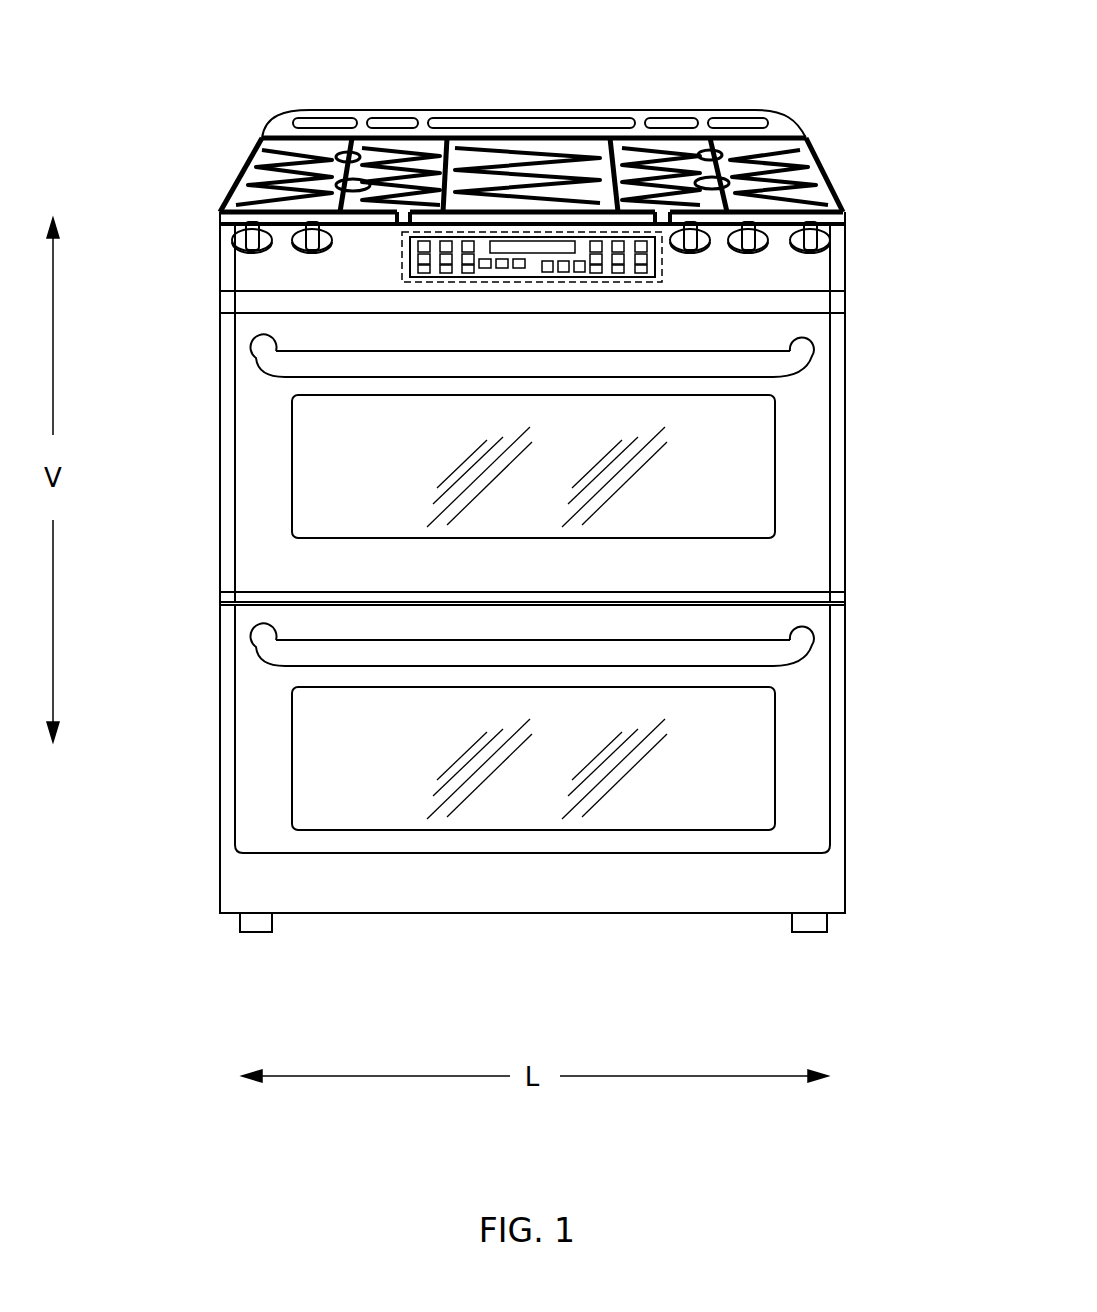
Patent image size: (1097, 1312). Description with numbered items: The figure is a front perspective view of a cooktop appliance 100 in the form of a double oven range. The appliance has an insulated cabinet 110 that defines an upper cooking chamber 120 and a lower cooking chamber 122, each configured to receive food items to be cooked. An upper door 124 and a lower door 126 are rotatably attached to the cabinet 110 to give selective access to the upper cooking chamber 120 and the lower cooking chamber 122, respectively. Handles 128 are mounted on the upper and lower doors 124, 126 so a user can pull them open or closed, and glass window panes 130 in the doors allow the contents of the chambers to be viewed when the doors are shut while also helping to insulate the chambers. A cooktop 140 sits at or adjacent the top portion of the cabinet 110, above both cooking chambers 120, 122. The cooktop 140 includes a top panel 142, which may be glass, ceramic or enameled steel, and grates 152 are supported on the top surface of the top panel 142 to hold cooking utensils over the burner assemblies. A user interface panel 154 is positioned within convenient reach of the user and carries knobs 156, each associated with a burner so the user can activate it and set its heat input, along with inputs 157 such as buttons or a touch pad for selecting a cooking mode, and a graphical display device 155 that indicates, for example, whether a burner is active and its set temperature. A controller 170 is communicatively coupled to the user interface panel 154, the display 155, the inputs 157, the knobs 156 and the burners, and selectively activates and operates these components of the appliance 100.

The cooktop appliance 100 is at (198, 118).
The cabinet 110 is at (707, 300).
The upper cooking chamber 120 is at (805, 471).
The lower cooking chamber 122 is at (805, 780).
The upper door 124 is at (228, 522).
The lower door 126 is at (228, 790).
The handles 128 is at (357, 365).
The glass window panes 130 is at (750, 514).
The cooktop 140 is at (803, 125).
The top panel 142 is at (842, 215).
The grates 152 is at (250, 183).
The user interface panel 154 is at (343, 238).
The graphical display device 155 is at (522, 225).
The knobs 156 is at (297, 253).
The inputs 157 is at (487, 275).
The controller 170 is at (402, 247).